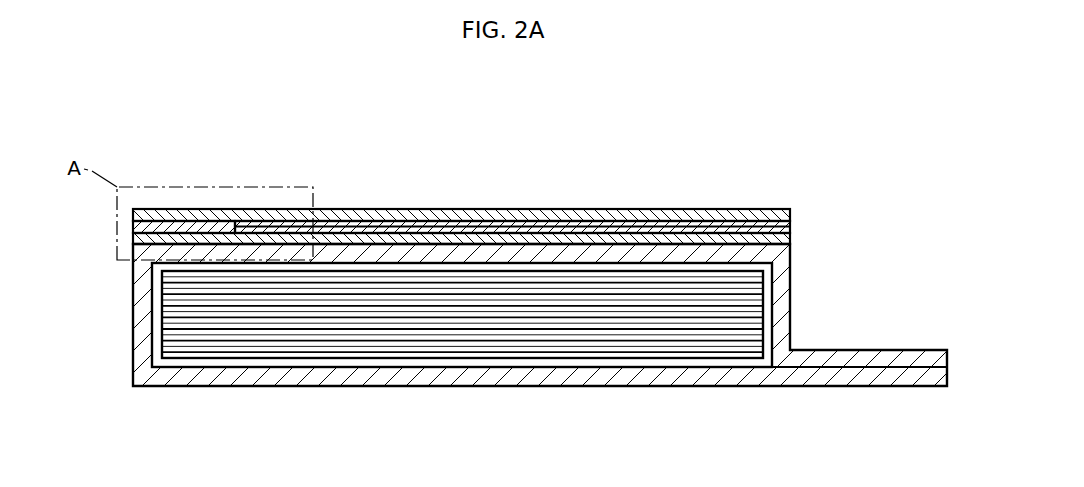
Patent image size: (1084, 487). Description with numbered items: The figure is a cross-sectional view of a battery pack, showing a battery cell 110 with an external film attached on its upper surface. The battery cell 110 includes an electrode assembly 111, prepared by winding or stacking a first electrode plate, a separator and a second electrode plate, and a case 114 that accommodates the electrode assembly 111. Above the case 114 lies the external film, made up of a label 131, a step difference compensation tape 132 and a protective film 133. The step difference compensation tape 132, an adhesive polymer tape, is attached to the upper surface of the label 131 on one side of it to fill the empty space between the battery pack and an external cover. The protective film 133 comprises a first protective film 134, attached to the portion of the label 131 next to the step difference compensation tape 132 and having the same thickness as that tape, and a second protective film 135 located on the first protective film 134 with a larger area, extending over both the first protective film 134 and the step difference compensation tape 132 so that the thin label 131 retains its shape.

The battery cell 110 is at (808, 291).
The electrode assembly 111 is at (679, 368).
The case 114 is at (142, 316).
The label 131 is at (392, 233).
The step difference compensation tape 132 is at (183, 228).
The protective film 133 is at (461, 167).
The first protective film 134 is at (552, 230).
The second protective film 135 is at (572, 131).